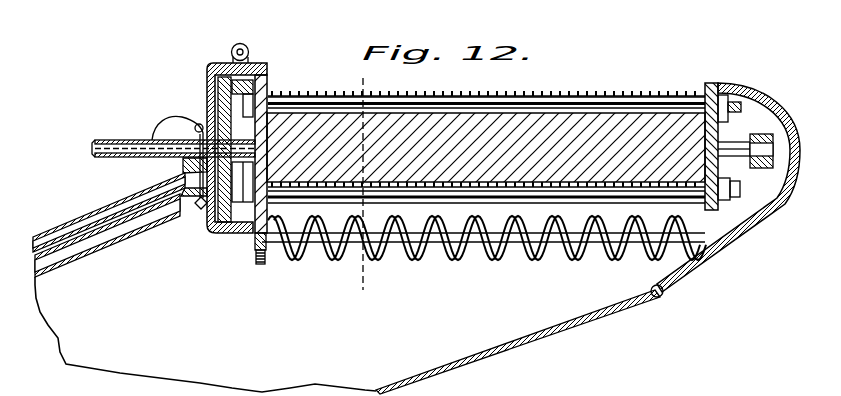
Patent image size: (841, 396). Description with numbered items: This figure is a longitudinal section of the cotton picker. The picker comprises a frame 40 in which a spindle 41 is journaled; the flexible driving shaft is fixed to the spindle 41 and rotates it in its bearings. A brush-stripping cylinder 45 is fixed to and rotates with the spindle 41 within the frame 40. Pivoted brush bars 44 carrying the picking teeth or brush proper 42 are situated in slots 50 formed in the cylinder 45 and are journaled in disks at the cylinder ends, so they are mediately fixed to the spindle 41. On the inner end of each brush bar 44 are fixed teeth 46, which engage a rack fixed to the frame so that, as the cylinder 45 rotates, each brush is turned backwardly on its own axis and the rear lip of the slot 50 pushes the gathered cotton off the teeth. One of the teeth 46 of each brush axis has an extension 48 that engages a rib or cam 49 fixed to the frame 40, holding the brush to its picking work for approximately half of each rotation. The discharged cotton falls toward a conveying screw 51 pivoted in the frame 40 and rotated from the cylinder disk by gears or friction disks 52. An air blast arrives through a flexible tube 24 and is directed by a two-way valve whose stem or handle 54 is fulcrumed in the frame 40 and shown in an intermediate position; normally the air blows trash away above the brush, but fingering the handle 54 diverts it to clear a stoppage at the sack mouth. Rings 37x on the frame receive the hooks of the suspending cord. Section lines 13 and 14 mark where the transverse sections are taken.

The section line 13 is at (368, 187).
The section line 14 is at (232, 62).
The flexible tube 24 is at (141, 234).
The rings 37x is at (247, 49).
The picker frame 40 is at (265, 77).
The spindle 41 is at (106, 141).
The picking teeth or brush 42 is at (347, 93).
The brush bars 44 is at (583, 101).
The brush-stripping cylinder 45 is at (523, 115).
The teeth 46 is at (217, 82).
The extension 48 is at (252, 93).
The rib or cam 49 is at (205, 120).
The slots 50 is at (637, 115).
The conveying screw 51 is at (490, 252).
The gears or friction disks 52 is at (258, 266).
The valve stem or handle 54 is at (160, 136).